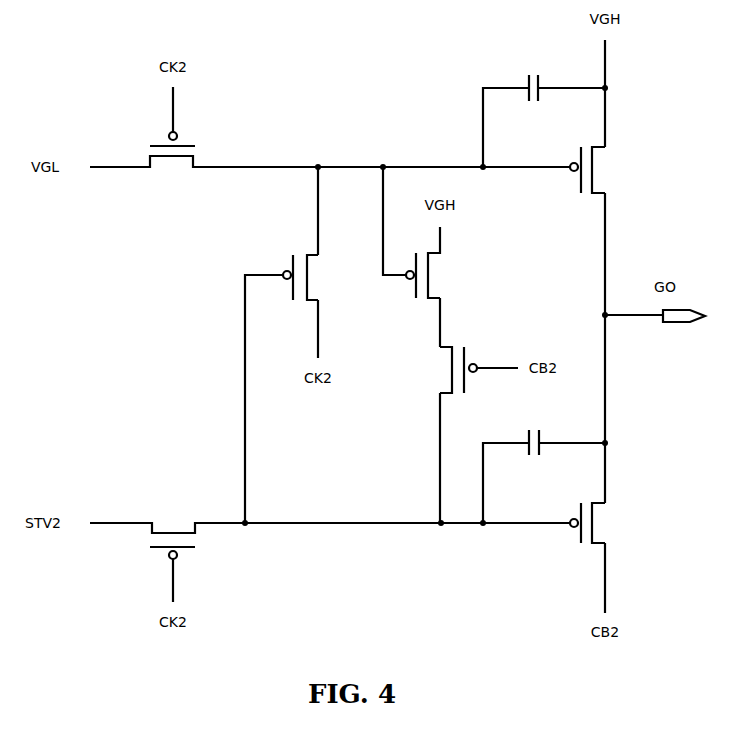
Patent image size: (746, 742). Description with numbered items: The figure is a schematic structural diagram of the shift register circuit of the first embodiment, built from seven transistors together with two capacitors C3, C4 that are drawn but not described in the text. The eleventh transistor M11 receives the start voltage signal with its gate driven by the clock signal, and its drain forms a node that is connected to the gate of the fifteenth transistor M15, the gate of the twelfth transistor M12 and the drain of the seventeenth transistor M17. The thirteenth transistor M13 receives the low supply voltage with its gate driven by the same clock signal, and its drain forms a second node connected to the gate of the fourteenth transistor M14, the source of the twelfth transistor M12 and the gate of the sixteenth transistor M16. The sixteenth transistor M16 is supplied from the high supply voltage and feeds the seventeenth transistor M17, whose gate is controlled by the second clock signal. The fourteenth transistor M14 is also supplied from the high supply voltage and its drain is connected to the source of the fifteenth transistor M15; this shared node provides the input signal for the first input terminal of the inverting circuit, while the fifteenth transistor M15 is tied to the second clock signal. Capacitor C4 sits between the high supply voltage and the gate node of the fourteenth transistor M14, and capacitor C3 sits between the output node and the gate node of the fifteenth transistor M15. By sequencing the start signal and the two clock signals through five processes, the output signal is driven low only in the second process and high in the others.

The eleventh transistor M11 is at (172, 547).
The twelfth transistor M12 is at (314, 277).
The thirteenth transistor M13 is at (172, 141).
The fourteenth transistor M14 is at (611, 170).
The fifteenth transistor M15 is at (611, 523).
The sixteenth transistor M16 is at (448, 262).
The seventeenth transistor M17 is at (454, 370).
The third capacitor C3 is at (544, 476).
The fourth capacitor C4 is at (544, 108).